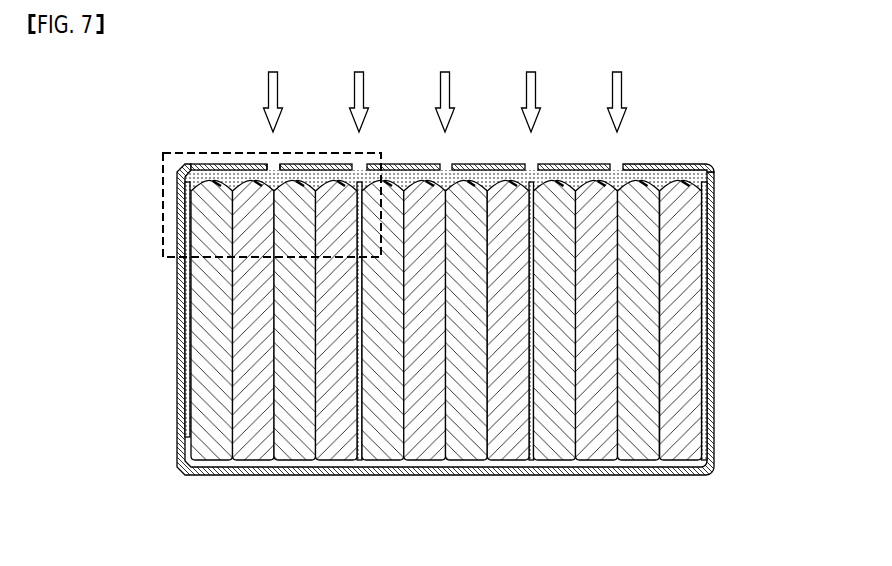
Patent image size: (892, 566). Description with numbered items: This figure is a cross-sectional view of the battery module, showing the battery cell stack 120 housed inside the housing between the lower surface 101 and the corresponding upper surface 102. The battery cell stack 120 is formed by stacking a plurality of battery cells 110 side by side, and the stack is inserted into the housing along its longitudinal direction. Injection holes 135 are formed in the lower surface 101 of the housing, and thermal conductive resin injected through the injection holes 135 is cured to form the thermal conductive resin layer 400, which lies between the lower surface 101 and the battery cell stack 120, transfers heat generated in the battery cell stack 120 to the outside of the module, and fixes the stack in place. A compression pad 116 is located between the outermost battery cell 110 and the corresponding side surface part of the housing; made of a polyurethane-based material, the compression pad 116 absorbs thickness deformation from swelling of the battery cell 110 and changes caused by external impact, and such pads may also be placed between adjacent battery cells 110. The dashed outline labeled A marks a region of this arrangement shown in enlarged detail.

The lower surface 101 is at (670, 164).
The upper surface 102 is at (558, 476).
The battery cell 110 is at (635, 273).
The compression pad 116 is at (708, 200).
The battery cell stack 120 is at (658, 327).
The injection hole 135 is at (269, 155).
The thermal conductive resin layer 400 is at (403, 177).
The region A is at (181, 153).